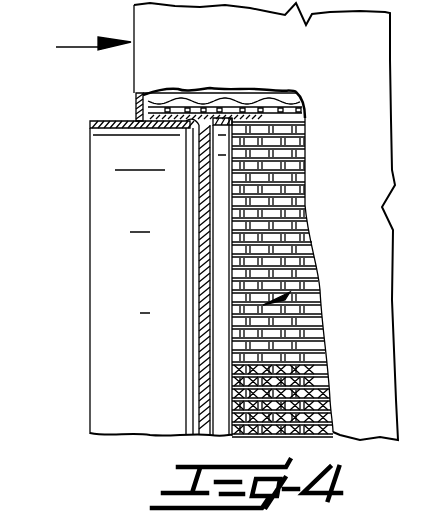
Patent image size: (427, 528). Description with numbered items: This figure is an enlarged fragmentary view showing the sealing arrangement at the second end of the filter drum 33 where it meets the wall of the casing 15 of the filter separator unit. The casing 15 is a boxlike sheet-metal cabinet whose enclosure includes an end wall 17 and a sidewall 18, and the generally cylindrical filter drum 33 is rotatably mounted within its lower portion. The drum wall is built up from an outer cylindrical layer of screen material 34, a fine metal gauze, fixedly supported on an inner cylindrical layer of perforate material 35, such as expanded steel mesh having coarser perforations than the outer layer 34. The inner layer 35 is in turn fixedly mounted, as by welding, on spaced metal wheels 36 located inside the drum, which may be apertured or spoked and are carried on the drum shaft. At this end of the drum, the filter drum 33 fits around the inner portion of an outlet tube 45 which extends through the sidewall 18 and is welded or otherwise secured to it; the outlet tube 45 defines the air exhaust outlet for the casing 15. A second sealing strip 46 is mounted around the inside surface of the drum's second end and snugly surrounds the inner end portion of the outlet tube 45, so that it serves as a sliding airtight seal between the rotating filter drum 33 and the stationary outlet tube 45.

The casing 15 is at (78, 45).
The end wall 17 is at (352, 105).
The sidewall 18 is at (135, 106).
The filter drum 33 is at (263, 305).
The screen material 34 is at (253, 102).
The perforate material 35 is at (284, 228).
The metal wheels 36 is at (198, 349).
The outlet tube 45 is at (100, 121).
The second sealing strip 46 is at (175, 102).